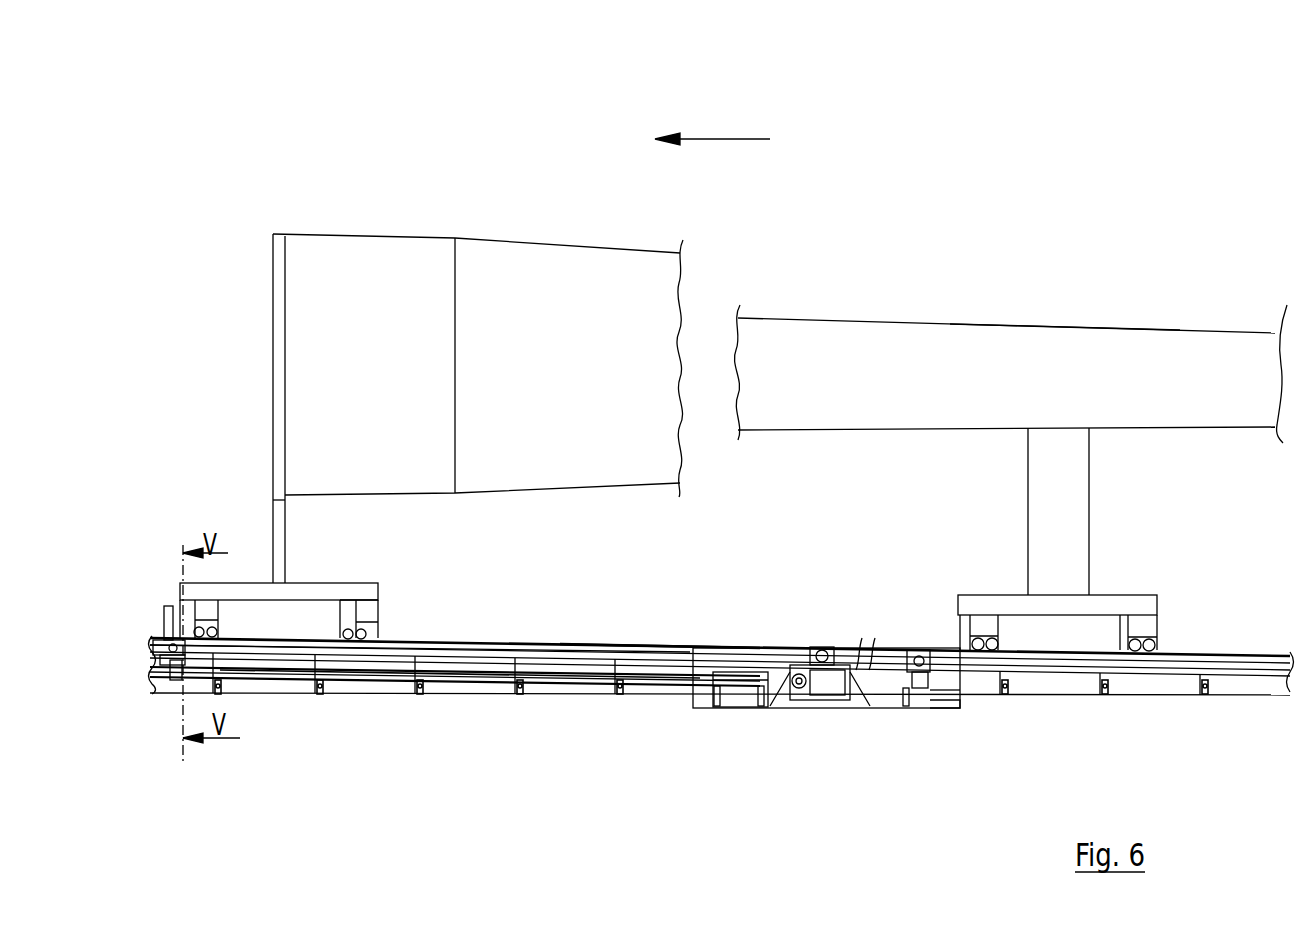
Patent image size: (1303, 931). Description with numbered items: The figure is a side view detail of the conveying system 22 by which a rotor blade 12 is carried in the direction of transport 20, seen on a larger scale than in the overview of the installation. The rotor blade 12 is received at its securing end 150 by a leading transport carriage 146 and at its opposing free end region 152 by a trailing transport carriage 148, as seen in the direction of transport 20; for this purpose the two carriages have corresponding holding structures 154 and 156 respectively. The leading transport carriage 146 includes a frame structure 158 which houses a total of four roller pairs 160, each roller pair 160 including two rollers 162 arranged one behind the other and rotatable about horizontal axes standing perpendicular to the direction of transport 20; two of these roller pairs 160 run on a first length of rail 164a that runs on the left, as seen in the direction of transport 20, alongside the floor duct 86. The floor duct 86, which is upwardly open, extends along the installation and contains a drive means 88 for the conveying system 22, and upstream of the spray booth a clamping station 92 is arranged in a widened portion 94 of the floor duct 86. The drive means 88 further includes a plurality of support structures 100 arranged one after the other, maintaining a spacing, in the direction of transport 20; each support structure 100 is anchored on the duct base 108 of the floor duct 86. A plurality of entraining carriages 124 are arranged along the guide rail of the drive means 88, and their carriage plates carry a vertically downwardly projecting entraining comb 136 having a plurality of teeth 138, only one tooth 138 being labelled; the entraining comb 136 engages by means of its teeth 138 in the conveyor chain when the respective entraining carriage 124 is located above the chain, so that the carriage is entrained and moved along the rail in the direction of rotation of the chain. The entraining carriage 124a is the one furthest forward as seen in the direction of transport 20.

The direction of transport 20 is at (725, 139).
The securing end 150 is at (352, 275).
The rotor blade 12 is at (848, 345).
The free end region 152 is at (1063, 345).
The leading transport carriage 146 is at (250, 578).
The trailing transport carriage 148 is at (1122, 588).
The holding structure 154 is at (296, 554).
The holding structure 156 is at (1096, 510).
The frame structure 158 is at (372, 590).
The roller pair 160 is at (352, 612).
The roller 162 is at (375, 605).
The entraining carriage 124a is at (170, 648).
The entraining comb 136 is at (163, 664).
The tooth 138 is at (180, 688).
The first length of rail 164a is at (645, 645).
The entraining carriage 124 is at (817, 645).
The support structure 100 is at (222, 698).
The duct base 108 is at (447, 698).
The conveying system 22 is at (522, 724).
The floor duct 86 is at (566, 698).
The drive means 88 is at (751, 718).
The clamping station 92 is at (848, 718).
The widened portion 94 is at (955, 705).